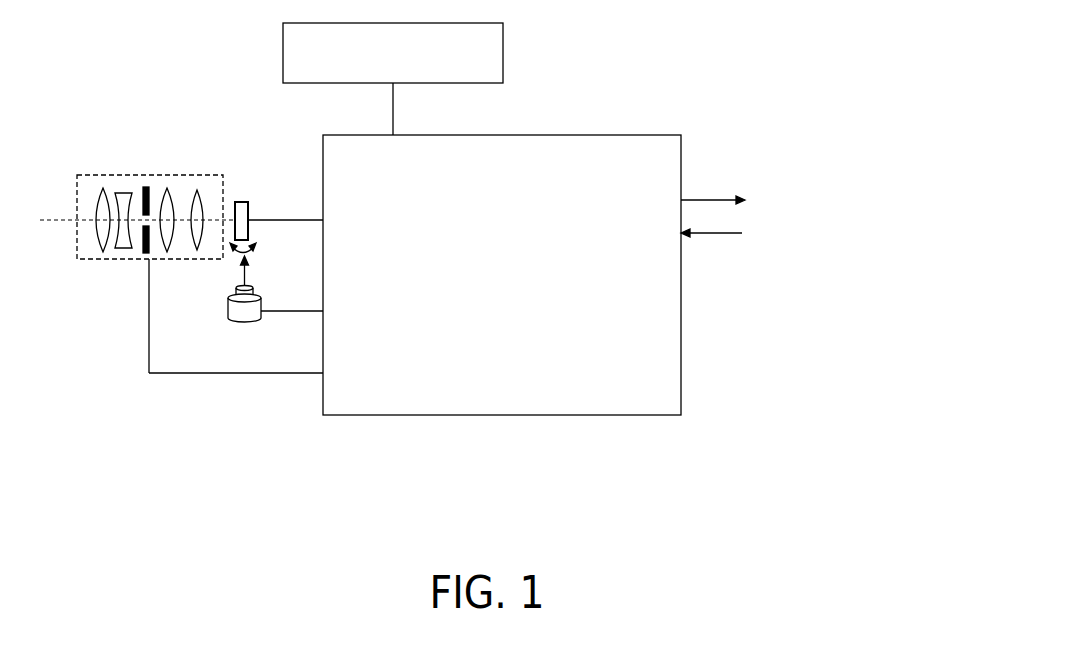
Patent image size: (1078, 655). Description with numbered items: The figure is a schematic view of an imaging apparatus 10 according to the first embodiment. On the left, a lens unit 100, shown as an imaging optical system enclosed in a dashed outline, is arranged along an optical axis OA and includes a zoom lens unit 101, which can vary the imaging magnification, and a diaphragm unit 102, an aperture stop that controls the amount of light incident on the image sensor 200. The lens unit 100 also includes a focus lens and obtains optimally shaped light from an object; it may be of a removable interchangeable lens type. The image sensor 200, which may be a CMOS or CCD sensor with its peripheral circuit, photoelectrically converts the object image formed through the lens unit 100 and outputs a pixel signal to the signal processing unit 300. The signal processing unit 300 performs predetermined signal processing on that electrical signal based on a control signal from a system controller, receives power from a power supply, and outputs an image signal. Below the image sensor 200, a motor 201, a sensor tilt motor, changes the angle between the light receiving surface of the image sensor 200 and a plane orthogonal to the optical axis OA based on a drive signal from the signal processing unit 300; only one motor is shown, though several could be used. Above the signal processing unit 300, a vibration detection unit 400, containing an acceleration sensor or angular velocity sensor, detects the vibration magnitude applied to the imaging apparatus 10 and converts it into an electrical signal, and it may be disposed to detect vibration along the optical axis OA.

The imaging apparatus 10 is at (763, 29).
The lens unit 100 is at (78, 174).
The zoom lens unit 101 is at (161, 190).
The diaphragm unit 102 is at (143, 258).
The image sensor 200 is at (240, 201).
The motor 201 is at (256, 342).
The signal processing unit 300 is at (647, 415).
The vibration detection unit 400 is at (503, 50).
The optical axis OA is at (55, 221).